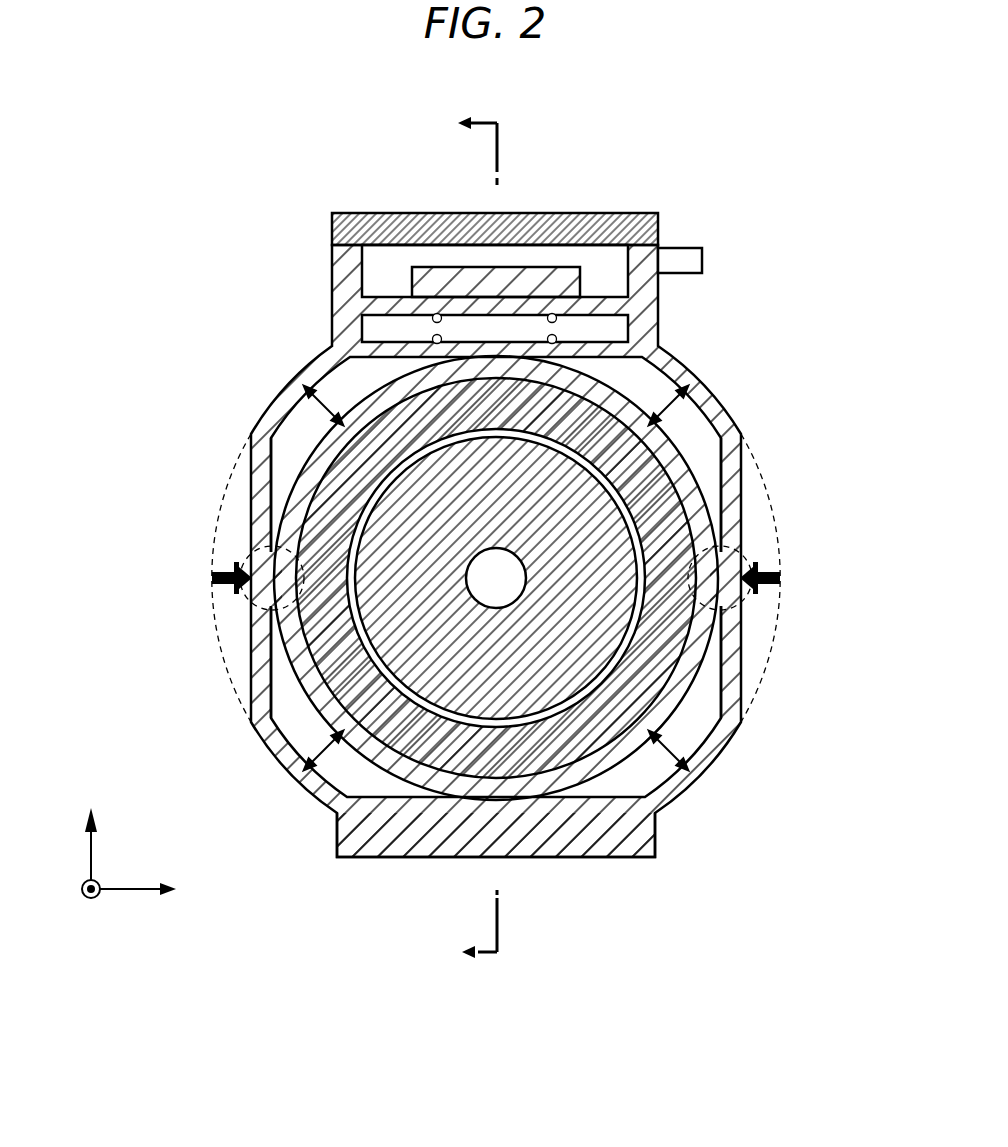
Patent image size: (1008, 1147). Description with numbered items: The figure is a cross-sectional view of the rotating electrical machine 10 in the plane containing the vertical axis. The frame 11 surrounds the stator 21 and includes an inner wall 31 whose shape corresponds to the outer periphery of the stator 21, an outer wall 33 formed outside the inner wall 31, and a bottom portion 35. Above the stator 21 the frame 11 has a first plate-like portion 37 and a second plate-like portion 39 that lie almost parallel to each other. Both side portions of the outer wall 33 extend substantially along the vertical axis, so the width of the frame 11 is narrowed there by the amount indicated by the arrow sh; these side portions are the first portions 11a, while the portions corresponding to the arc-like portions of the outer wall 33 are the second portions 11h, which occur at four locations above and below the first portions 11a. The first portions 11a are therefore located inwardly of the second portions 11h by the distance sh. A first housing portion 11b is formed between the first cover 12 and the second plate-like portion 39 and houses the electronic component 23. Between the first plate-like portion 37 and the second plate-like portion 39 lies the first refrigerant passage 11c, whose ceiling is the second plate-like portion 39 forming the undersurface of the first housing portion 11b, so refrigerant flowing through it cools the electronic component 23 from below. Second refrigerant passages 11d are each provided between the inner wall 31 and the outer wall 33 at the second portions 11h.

The rotating electrical machine 10 is at (182, 206).
The frame 11 is at (504, 586).
The first portions 11a is at (244, 546).
The first housing portion 11b is at (372, 280).
The first refrigerant passage 11c is at (617, 330).
The second refrigerant passages 11d is at (293, 428).
The second portions 11h is at (300, 400).
The first cover 12 is at (632, 212).
The stator 21 is at (603, 420).
The electronic component 23 is at (428, 266).
The inner wall 31 is at (566, 565).
The outer wall 33 is at (727, 483).
The bottom portion 35 is at (625, 857).
The first plate-like portion 37 is at (590, 337).
The second plate-like portion 39 is at (667, 262).
The arrow sh is at (238, 586).